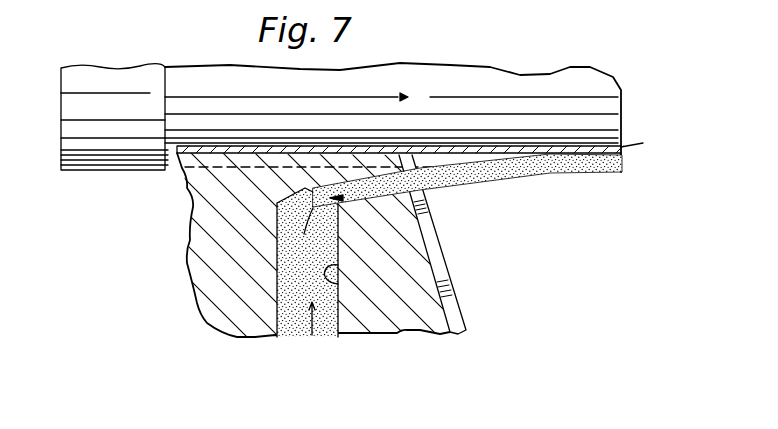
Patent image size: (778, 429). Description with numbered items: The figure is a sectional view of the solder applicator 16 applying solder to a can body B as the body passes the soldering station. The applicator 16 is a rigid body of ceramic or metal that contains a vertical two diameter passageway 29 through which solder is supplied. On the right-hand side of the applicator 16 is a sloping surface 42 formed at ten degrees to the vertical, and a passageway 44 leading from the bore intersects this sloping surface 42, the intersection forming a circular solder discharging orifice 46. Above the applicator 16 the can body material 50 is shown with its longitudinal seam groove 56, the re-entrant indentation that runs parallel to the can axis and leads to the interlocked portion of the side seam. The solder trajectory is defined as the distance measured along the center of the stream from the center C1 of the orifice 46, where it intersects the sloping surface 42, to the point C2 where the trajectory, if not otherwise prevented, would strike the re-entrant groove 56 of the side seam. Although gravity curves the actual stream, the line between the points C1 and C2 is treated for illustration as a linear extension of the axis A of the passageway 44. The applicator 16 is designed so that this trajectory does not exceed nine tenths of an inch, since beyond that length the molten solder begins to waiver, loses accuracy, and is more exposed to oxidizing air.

The solder applicator 16 is at (190, 240).
The vertical two diameter passageway 29 is at (342, 283).
The sloping surface 42 is at (460, 313).
The passageway 44 is at (375, 188).
The solder discharging orifice 46 is at (430, 195).
The can body material 50 is at (293, 150).
The longitudinal seam groove 56 is at (450, 158).
The axis of the passageway A is at (378, 182).
The can body B is at (95, 168).
The center of the orifice C1 is at (410, 175).
The trajectory strike point C2 is at (575, 157).